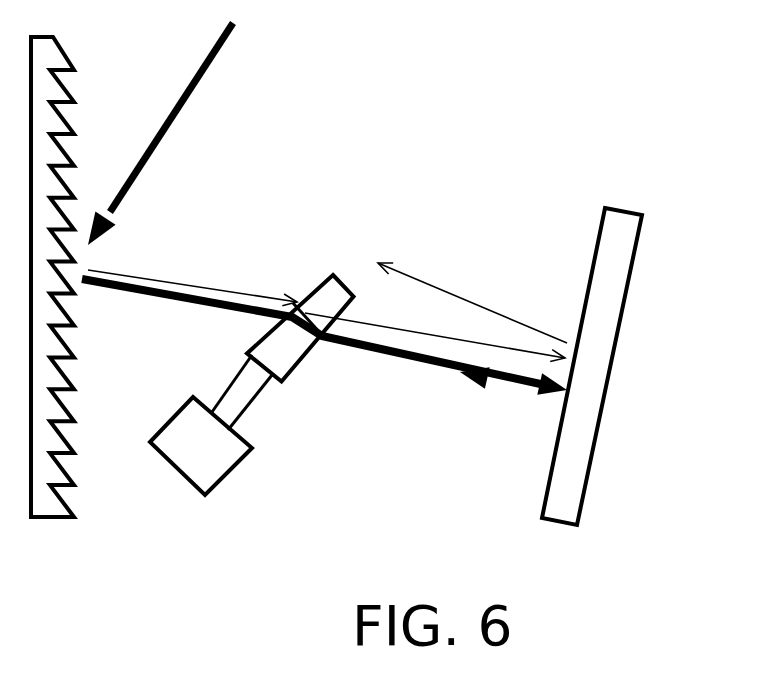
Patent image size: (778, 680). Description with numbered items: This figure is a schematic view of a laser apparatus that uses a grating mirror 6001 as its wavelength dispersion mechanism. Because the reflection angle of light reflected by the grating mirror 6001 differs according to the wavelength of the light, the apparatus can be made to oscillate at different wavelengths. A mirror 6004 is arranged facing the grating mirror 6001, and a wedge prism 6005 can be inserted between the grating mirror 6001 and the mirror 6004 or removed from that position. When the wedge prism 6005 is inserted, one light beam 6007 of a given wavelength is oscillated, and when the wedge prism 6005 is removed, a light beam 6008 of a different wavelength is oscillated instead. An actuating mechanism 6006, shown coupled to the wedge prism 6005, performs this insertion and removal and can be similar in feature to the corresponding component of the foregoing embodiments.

The grating mirror 6001 is at (44, 487).
The mirror 6004 is at (610, 278).
The wedge prism 6005 is at (290, 352).
The actuating mechanism 6006 is at (195, 455).
The light beam 6007 is at (411, 367).
The light beam 6008 is at (453, 285).